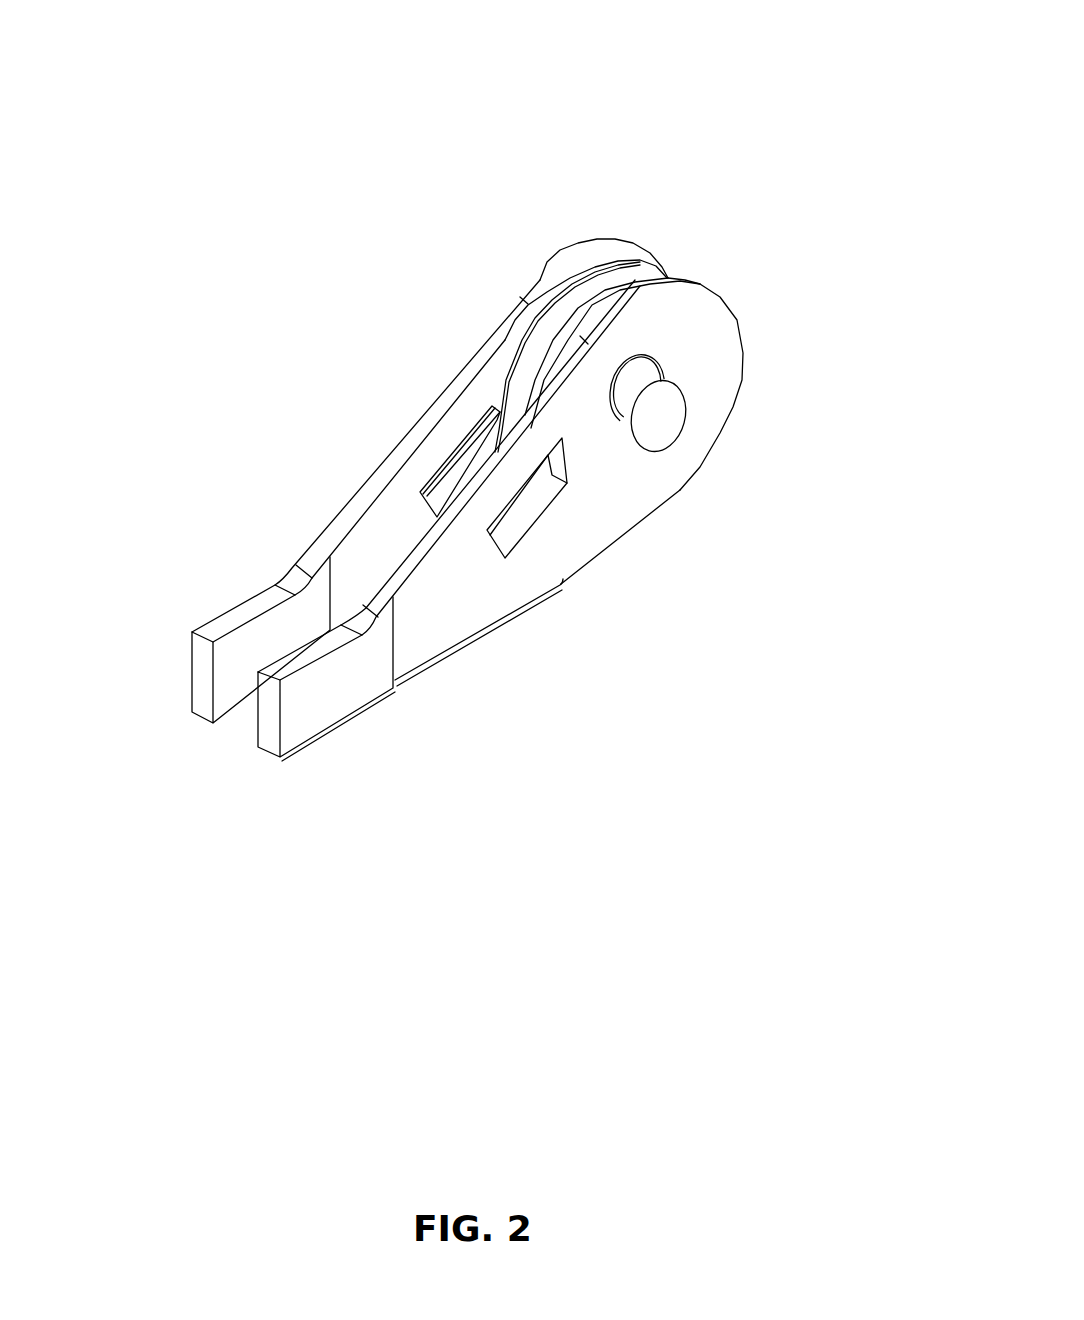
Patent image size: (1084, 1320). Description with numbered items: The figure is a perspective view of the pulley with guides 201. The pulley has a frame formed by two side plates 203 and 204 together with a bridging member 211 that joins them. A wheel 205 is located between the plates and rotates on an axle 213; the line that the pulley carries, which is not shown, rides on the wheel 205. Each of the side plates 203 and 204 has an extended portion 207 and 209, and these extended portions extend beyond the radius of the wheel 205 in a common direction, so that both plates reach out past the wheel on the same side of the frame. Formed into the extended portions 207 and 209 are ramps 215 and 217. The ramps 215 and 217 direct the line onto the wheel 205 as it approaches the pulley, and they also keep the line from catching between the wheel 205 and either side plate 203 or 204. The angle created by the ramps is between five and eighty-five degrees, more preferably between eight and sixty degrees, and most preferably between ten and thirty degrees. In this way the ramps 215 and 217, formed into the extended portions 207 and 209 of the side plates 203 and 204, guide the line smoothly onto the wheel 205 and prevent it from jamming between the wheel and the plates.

The pulley with guides 201 is at (702, 241).
The side plate 203 is at (705, 340).
The side plate 204 is at (541, 279).
The wheel 205 is at (596, 286).
The extended portion 207 is at (450, 423).
The extended portion 209 is at (528, 575).
The bridging member 211 is at (473, 642).
The axle 213 is at (660, 427).
The ramp 215 is at (532, 505).
The ramp 217 is at (457, 468).